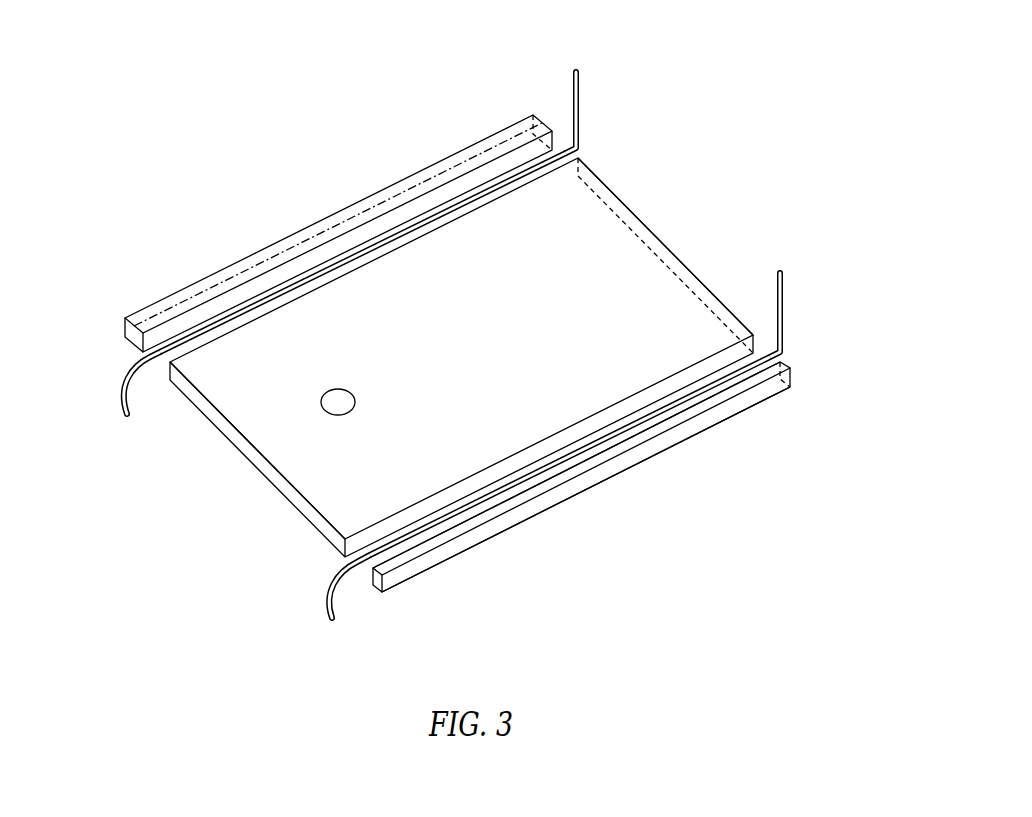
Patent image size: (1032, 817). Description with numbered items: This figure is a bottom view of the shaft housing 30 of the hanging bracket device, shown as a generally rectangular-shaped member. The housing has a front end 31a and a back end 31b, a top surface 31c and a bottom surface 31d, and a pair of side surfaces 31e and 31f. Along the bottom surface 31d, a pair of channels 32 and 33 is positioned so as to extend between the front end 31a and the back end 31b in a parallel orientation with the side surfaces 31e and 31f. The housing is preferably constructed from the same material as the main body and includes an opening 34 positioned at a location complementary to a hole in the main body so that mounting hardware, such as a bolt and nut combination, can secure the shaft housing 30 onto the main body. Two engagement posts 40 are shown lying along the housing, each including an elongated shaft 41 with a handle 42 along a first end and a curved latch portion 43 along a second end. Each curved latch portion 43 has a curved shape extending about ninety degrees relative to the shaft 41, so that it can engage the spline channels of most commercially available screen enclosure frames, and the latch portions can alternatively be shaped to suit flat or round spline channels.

The shaft housing 30 is at (123, 181).
The front end 31a is at (652, 232).
The back end 31b is at (247, 461).
The top surface 31c is at (440, 563).
The bottom surface 31d is at (486, 333).
The side surface 31e is at (280, 240).
The side surface 31f is at (563, 493).
The channel 32 is at (430, 192).
The channel 33 is at (667, 416).
The opening 34 is at (339, 389).
The engagement post 40 is at (472, 328).
The elongated shaft 41 is at (497, 185).
The handle 42 is at (583, 85).
The curved latch portion 43 is at (118, 405).